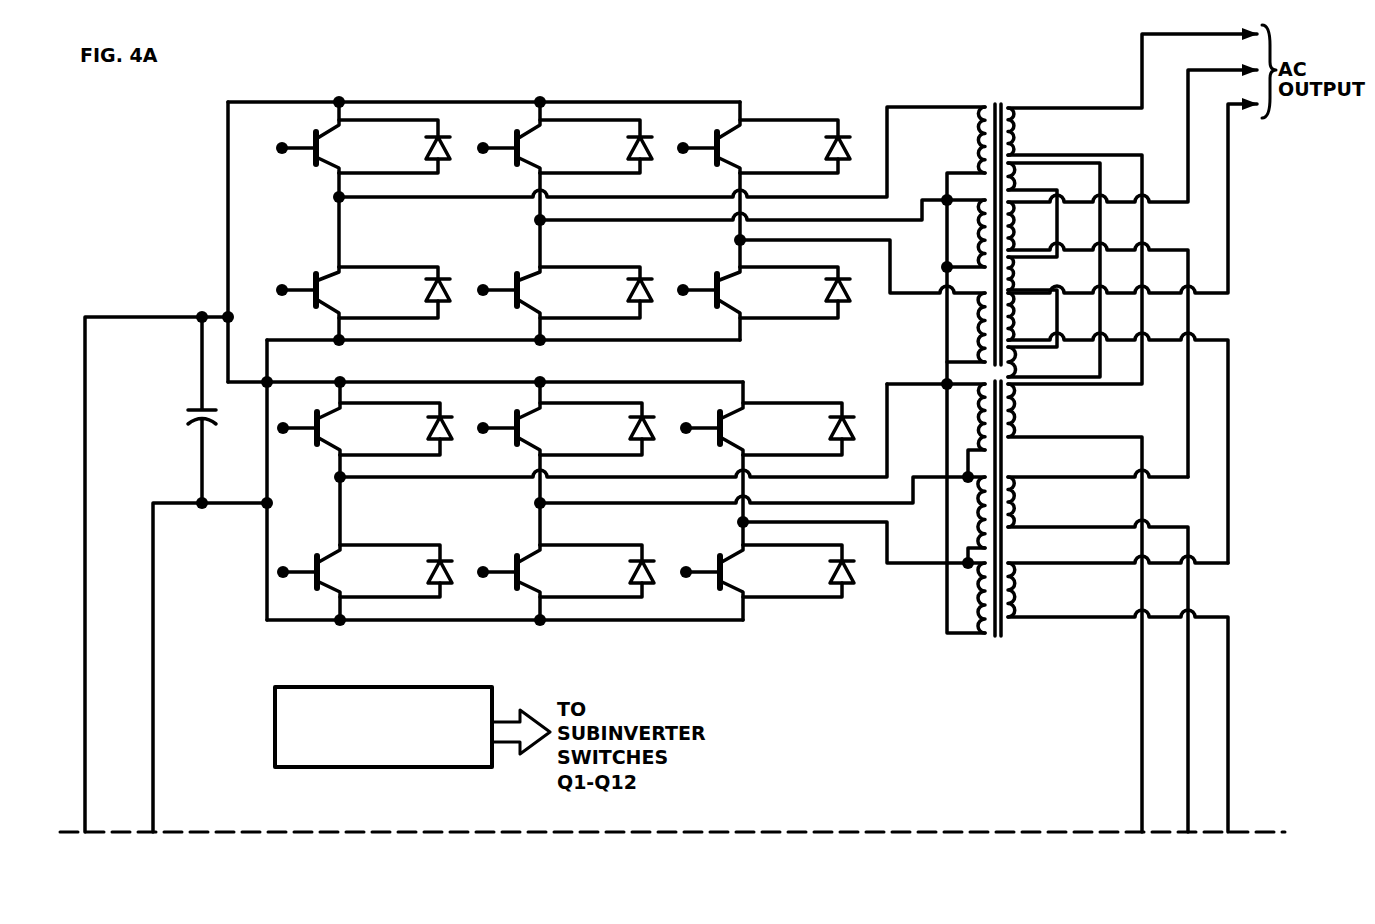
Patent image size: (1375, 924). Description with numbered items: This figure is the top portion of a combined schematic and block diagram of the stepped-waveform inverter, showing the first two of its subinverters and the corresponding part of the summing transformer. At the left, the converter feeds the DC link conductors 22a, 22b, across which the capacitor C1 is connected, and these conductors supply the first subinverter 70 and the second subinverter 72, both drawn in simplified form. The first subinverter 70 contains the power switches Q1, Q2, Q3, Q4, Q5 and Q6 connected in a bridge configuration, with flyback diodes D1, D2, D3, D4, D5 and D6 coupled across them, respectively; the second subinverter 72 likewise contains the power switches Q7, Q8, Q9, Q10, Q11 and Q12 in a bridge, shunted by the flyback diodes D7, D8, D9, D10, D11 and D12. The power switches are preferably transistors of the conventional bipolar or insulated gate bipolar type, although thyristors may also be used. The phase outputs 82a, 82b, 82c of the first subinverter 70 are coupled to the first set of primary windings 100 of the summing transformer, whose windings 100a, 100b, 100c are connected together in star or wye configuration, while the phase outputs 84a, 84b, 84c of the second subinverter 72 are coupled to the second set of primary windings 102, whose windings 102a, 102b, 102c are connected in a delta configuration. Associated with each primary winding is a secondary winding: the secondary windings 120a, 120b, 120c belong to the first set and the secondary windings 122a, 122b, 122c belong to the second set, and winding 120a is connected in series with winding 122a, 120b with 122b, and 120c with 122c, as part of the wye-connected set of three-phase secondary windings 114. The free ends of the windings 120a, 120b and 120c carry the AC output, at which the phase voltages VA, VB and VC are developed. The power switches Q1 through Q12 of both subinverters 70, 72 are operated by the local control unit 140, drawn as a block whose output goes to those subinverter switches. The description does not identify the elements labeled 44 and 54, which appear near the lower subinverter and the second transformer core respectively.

The DC link conductor 22a is at (176, 317).
The DC link conductor 22b is at (176, 503).
The capacitor C1 is at (195, 409).
The second subinverter 72 is at (500, 370).
The first subinverter 70 is at (655, 352).
The lower subinverter 44 is at (666, 632).
The power switch Q1 is at (332, 127).
The power switch Q2 is at (332, 273).
The power switch Q3 is at (532, 127).
The power switch Q4 is at (530, 300).
The power switch Q5 is at (733, 127).
The power switch Q6 is at (730, 302).
The power switch Q7 is at (337, 407).
The power switch Q8 is at (334, 556).
The power switch Q9 is at (540, 408).
The power switch Q10 is at (530, 558).
The power switch Q11 is at (745, 408).
The power switch Q12 is at (745, 552).
The flyback diode D1 is at (448, 146).
The flyback diode D2 is at (446, 290).
The flyback diode D3 is at (630, 150).
The flyback diode D4 is at (628, 290).
The flyback diode D5 is at (846, 148).
The flyback diode D6 is at (826, 290).
The flyback diode D7 is at (446, 430).
The flyback diode D8 is at (438, 567).
The flyback diode D9 is at (648, 430).
The flyback diode D10 is at (630, 572).
The flyback diode D11 is at (849, 430).
The flyback diode D12 is at (851, 570).
The phase output 82a is at (337, 197).
The phase output 82b is at (538, 215).
The phase output 82c is at (738, 240).
The phase output 84a is at (340, 480).
The phase output 84b is at (538, 505).
The phase output 84c is at (741, 522).
The first set of primary windings 100 is at (950, 100).
The primary winding 100a is at (982, 130).
The primary winding 100b is at (982, 240).
The primary winding 100c is at (982, 325).
The set of three-phase secondary windings 114 is at (1010, 96).
The secondary winding 120a is at (1015, 130).
The secondary winding 120b is at (1020, 225).
The secondary winding 120c is at (1020, 318).
The second set of primary windings 102 is at (920, 373).
The primary winding 102a is at (982, 410).
The primary winding 102b is at (982, 525).
The primary winding 102c is at (982, 622).
The second transformer core 54 is at (933, 580).
The secondary winding 122a is at (1015, 410).
The secondary winding 122b is at (1015, 505).
The secondary winding 122c is at (1015, 590).
The phase voltage VA is at (1140, 34).
The phase voltage VB is at (1188, 70).
The phase voltage VC is at (1228, 135).
The local control unit 140 is at (275, 733).